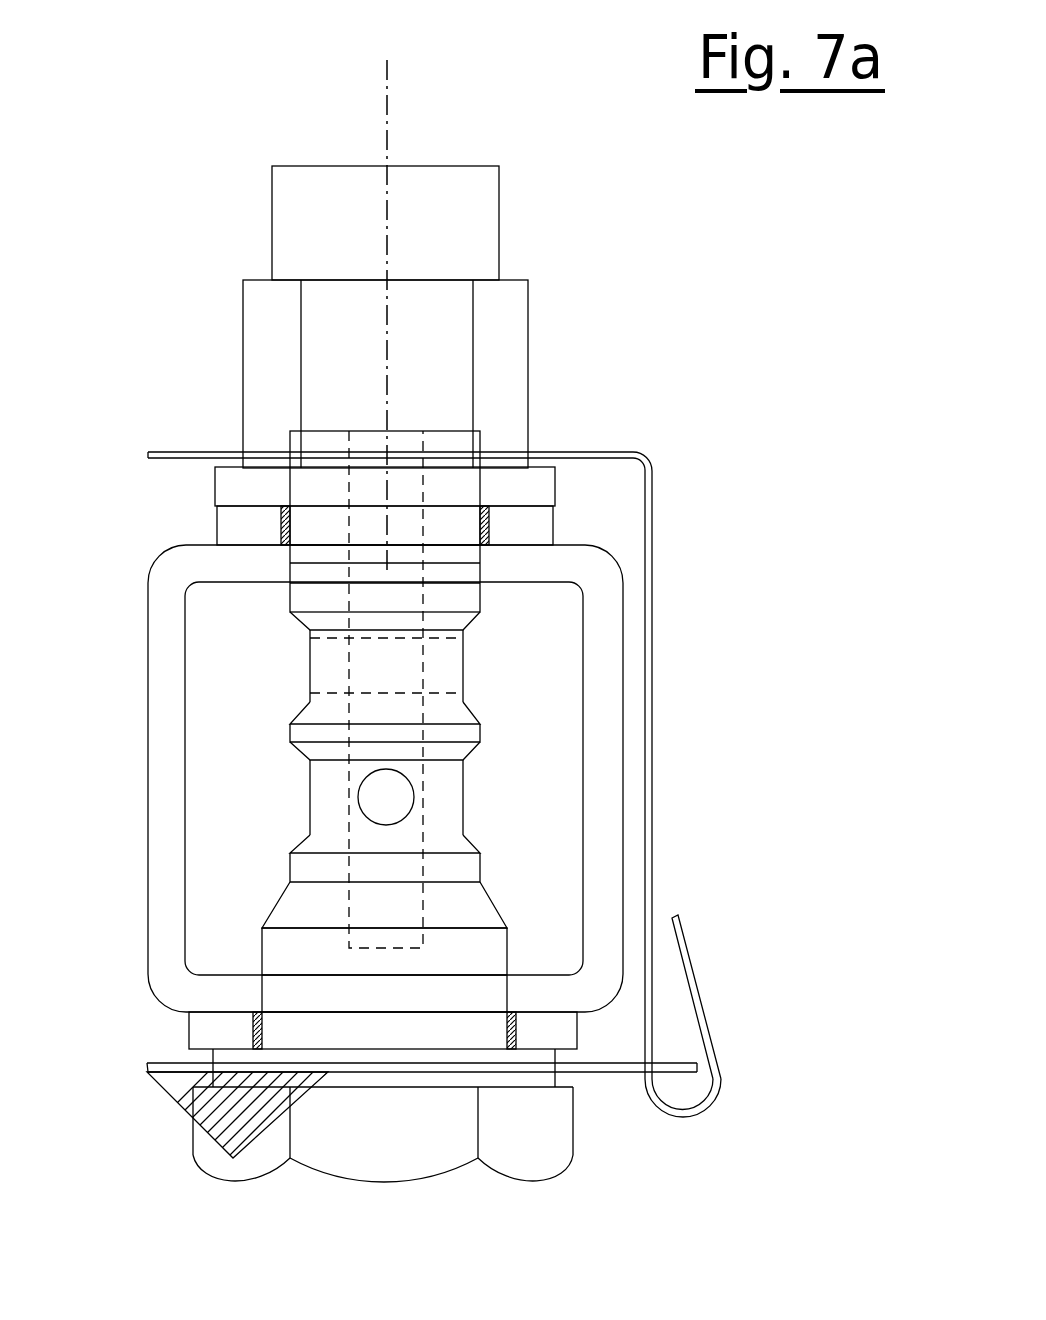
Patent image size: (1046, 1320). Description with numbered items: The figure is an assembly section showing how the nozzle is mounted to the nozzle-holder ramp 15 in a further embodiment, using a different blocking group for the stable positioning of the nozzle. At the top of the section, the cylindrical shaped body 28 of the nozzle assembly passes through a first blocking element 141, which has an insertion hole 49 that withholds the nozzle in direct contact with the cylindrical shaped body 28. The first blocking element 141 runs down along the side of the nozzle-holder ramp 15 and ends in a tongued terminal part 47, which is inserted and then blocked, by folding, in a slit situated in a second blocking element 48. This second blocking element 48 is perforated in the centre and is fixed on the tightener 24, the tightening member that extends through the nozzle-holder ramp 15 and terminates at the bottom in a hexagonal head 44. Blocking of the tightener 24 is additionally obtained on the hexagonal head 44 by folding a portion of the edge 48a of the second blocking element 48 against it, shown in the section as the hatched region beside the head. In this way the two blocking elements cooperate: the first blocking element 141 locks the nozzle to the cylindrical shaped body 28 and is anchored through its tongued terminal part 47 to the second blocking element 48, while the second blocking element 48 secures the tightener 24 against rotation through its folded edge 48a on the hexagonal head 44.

The cylindrical shaped body 28 is at (262, 295).
The insertion hole 49 is at (532, 455).
The first blocking element 141 is at (650, 535).
The tongued terminal part 47 is at (693, 980).
The nozzle-holder ramp 15 is at (148, 777).
The tightener 24 is at (477, 907).
The second blocking element 48 is at (147, 1068).
The edge 48a is at (233, 1132).
The hexagonal head 44 is at (575, 1162).